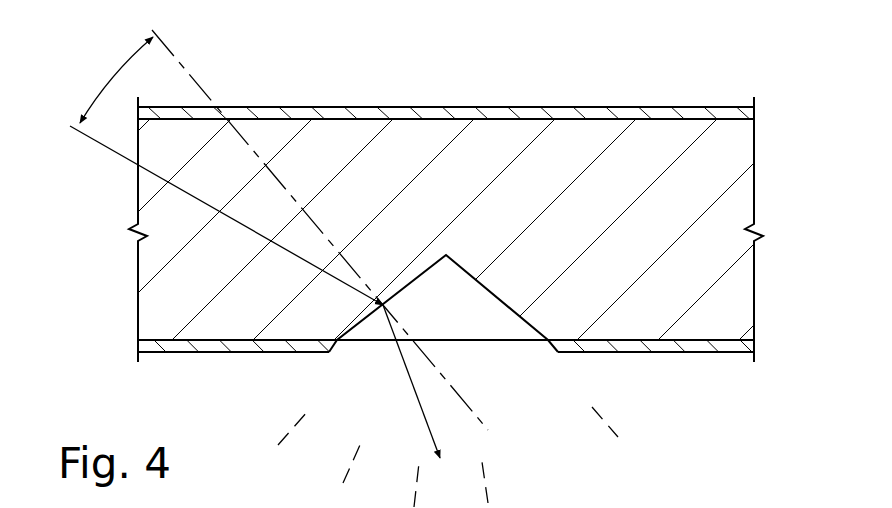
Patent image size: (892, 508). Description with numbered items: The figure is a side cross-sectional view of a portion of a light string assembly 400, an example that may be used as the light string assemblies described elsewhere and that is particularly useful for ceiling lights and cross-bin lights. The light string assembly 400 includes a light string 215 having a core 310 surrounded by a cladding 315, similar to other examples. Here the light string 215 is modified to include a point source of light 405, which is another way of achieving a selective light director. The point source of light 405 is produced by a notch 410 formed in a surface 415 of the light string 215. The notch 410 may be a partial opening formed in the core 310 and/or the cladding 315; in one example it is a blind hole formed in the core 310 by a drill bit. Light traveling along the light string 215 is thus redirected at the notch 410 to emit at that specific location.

The light string assembly 400 is at (648, 60).
The core 310 is at (755, 292).
The cladding 315 is at (213, 352).
The notch 410 is at (403, 293).
The point source of light 405 is at (499, 355).
The surface 415 is at (630, 365).
The light string 215 is at (685, 383).